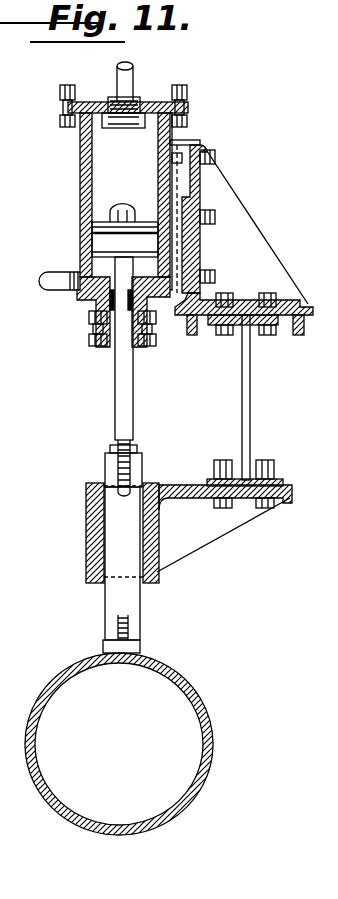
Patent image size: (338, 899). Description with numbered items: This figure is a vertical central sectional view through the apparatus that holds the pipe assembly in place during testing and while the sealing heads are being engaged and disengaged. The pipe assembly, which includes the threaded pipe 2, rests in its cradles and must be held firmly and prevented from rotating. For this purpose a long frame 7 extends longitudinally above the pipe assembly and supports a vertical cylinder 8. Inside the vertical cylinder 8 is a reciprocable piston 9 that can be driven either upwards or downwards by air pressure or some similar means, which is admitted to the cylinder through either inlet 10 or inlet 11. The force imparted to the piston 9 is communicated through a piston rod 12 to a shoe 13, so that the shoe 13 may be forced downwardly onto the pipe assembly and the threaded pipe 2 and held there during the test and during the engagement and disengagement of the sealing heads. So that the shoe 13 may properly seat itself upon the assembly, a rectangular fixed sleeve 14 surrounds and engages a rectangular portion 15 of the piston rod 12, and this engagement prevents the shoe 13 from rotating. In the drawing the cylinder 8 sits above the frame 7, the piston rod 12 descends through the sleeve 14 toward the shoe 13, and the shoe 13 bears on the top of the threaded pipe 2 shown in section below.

The threaded pipe 2 is at (210, 721).
The long frame 7 is at (250, 392).
The vertical cylinder 8 is at (137, 157).
The piston 9 is at (147, 222).
The inlet 10 is at (127, 82).
The inlet 11 is at (53, 277).
The piston rod 12 is at (120, 380).
The shoe 13 is at (143, 651).
The rectangular fixed sleeve 14 is at (157, 541).
The rectangular portion 15 is at (118, 567).